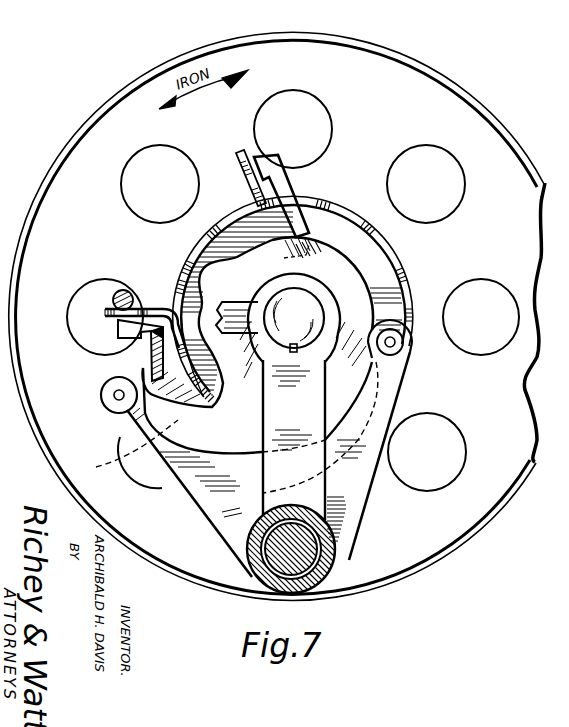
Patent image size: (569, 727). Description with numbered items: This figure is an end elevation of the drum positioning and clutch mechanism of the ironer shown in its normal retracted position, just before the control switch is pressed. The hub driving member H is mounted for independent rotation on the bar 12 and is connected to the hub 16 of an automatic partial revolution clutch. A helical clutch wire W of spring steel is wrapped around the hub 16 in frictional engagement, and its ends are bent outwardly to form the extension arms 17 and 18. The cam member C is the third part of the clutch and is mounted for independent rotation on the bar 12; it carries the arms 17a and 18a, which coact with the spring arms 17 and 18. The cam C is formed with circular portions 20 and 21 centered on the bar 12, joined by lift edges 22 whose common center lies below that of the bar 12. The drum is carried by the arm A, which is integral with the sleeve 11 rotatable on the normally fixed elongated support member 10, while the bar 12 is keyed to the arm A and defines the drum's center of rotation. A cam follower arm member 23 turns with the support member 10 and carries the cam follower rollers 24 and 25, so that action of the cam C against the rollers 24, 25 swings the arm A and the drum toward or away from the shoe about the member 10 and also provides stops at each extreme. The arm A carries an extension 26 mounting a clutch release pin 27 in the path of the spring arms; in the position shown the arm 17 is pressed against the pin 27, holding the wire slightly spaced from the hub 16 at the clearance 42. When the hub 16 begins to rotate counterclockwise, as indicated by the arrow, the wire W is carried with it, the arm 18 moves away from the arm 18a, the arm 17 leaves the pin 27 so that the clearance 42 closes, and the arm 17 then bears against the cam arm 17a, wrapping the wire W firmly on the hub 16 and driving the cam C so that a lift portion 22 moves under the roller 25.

The hub driving member H is at (453, 80).
The helical clutch wire W is at (413, 285).
The elongated member 10 is at (247, 548).
The sleeve 11 is at (346, 542).
The bar 12 is at (300, 306).
The hub 16 is at (350, 236).
The extension arm 17 is at (118, 313).
The arm 17a is at (130, 332).
The extension arm 18 is at (243, 152).
The arm 18a is at (285, 187).
The circular portion 20 is at (390, 273).
The circular portion 21 is at (100, 467).
The lift edges 22 is at (373, 402).
The cam follower arm member 23 is at (212, 514).
The cam follower roller 24 is at (104, 404).
The cam follower roller 25 is at (402, 352).
The extension 26 is at (230, 310).
The clutch release pin 27 is at (118, 292).
The clearance 42 is at (183, 333).
The arm A is at (302, 421).
The cam member C is at (244, 421).